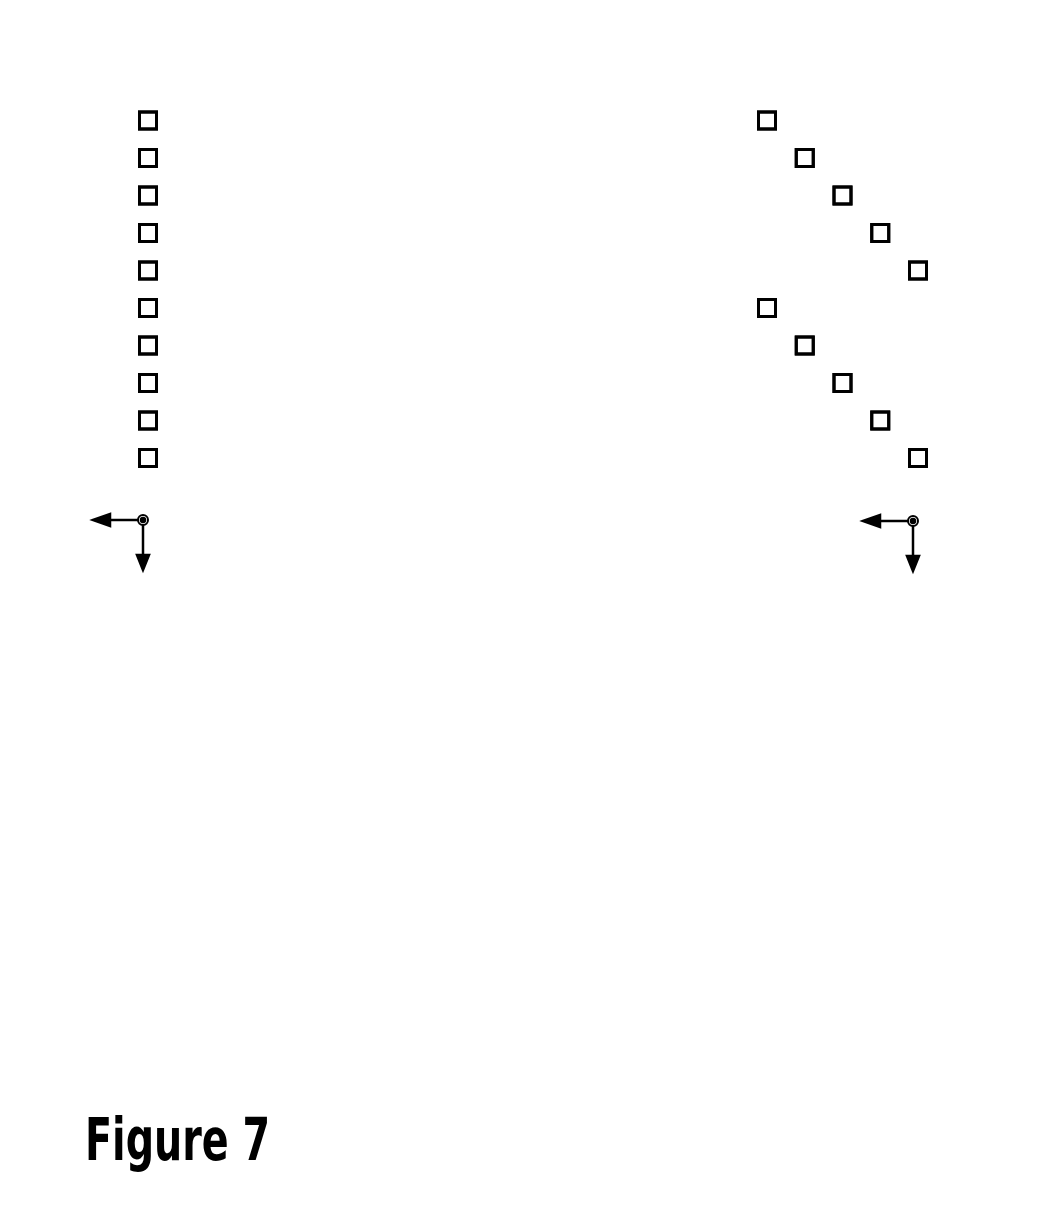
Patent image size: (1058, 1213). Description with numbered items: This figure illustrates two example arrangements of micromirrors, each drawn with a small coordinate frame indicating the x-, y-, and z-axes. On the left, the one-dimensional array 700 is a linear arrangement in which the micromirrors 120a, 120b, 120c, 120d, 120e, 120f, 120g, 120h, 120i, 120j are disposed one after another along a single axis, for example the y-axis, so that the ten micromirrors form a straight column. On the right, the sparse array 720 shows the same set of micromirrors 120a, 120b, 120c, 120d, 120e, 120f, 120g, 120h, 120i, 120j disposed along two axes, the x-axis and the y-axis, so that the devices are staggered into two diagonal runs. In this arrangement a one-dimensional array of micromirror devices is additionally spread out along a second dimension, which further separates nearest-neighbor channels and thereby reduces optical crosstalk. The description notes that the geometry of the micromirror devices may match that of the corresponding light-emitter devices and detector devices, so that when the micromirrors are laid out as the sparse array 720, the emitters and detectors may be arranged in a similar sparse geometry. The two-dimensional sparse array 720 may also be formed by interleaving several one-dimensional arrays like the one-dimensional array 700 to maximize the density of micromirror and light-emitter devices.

The 1-dimensional array 700 is at (192, 88).
The sparse array 720 is at (879, 87).
The micromirror 120a is at (138, 450).
The micromirror 120b is at (138, 412).
The micromirror 120c is at (138, 375).
The micromirror 120d is at (138, 338).
The micromirror 120e is at (138, 300).
The micromirror 120f is at (138, 262).
The micromirror 120g is at (138, 225).
The micromirror 120h is at (138, 188).
The micromirror 120i is at (138, 150).
The micromirror 120j is at (138, 112).